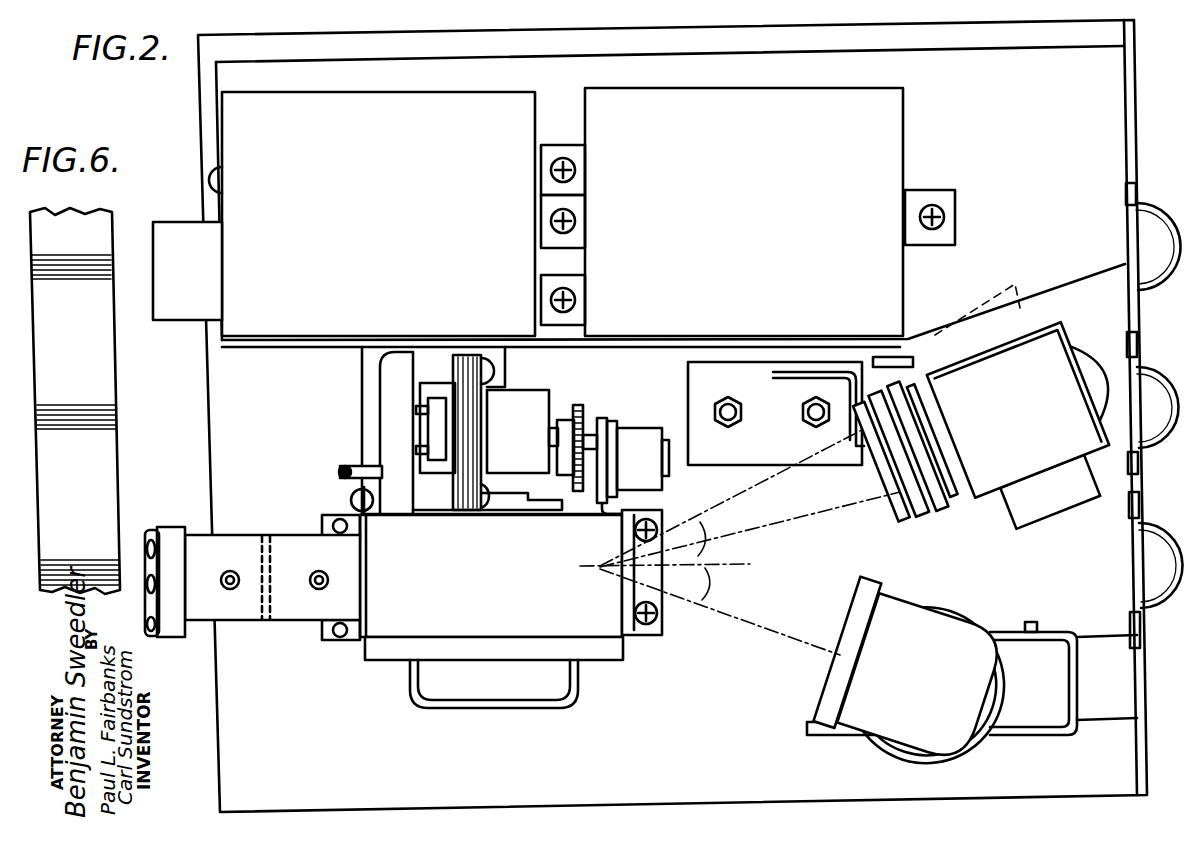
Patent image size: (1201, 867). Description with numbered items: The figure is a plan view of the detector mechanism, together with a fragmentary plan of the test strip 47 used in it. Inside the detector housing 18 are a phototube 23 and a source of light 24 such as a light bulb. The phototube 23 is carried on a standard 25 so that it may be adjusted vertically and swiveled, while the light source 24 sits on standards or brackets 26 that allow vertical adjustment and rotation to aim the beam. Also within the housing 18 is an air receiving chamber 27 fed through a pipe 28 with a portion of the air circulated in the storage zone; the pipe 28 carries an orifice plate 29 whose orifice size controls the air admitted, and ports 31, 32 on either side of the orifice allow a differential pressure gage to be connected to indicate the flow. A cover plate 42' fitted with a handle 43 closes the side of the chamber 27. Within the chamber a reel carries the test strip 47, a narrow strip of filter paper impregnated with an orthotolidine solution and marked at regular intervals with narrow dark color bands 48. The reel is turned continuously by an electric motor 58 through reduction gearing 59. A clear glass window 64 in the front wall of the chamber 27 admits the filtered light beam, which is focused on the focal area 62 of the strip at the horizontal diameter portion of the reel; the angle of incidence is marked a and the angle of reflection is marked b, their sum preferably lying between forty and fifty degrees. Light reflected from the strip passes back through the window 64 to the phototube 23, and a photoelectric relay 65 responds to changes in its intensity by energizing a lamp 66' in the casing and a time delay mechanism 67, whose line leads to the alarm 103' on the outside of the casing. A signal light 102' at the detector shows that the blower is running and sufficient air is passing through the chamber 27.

In FIG. 2, the detector housing 18 is at (218, 722).
In FIG. 2, the phototube 23 is at (922, 622).
In FIG. 2, the source of light 24 is at (1052, 350).
In FIG. 2, the standard 25 is at (1010, 630).
In FIG. 2, the standards or brackets 26 is at (880, 358).
In FIG. 2, the air receiving chamber 27 is at (385, 622).
In FIG. 2, the pipe 28 is at (246, 534).
In FIG. 2, the orifice plate 29 is at (272, 548).
In FIG. 2, the port 31 is at (235, 592).
In FIG. 2, the port 32 is at (316, 592).
In FIG. 2, the cover plate 42' is at (491, 672).
In FIG. 2, the handle 43 is at (444, 708).
In FIG. 6, the test strip 47 is at (128, 456).
In FIG. 6, the dark color bands 48 is at (116, 415).
In FIG. 2, the electric motor 58 is at (524, 400).
In FIG. 2, the reduction gearing 59 is at (581, 410).
In FIG. 2, the focal area 62 is at (588, 571).
In FIG. 2, the glass window 64 is at (642, 514).
In FIG. 2, the photoelectric relay 65 is at (895, 140).
In FIG. 2, the lamp 66' is at (1161, 229).
In FIG. 2, the time delay mechanism 67 is at (478, 120).
In FIG. 2, the signal light 102' is at (1168, 590).
In FIG. 2, the alarm 103' is at (1167, 422).
In FIG. 2, the angle of incidence a is at (707, 539).
In FIG. 2, the angle of reflection b is at (704, 586).